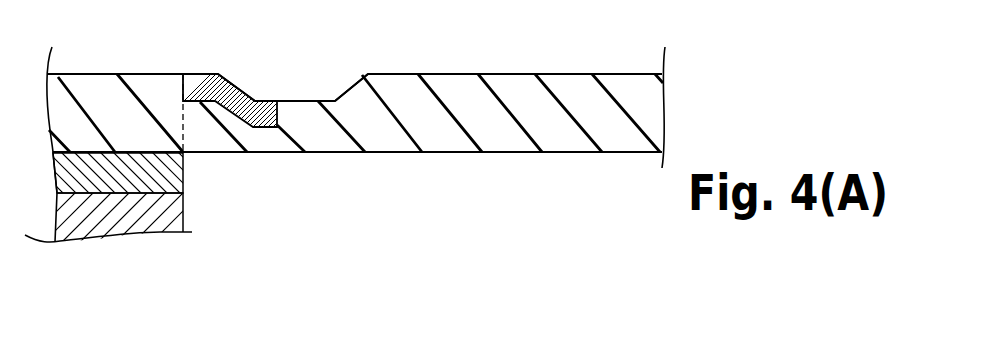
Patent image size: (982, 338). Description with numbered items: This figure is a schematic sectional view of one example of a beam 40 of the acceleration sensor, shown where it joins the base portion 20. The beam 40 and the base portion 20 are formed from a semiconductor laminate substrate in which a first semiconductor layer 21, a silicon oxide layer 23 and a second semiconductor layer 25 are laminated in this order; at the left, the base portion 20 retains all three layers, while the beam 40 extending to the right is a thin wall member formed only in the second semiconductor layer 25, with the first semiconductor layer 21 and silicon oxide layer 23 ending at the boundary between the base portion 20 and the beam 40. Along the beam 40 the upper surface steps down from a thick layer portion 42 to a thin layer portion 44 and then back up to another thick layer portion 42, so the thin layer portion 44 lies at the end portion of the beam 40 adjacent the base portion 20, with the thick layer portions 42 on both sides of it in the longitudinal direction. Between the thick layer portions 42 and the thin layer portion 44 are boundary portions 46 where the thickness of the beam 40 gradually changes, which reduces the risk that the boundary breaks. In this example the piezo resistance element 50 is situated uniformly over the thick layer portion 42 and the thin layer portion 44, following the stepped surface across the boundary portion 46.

The base portion 20 is at (180, 272).
The first semiconductor layer 21 is at (163, 212).
The silicon oxide layer 23 is at (165, 172).
The second semiconductor layer 25 is at (637, 120).
The beam 40 is at (654, 207).
The thick layer portion 42 is at (216, 60).
The thin layer portion 44 is at (333, 60).
The boundary portion 46 is at (218, 60).
The piezo resistance element 50 is at (190, 74).